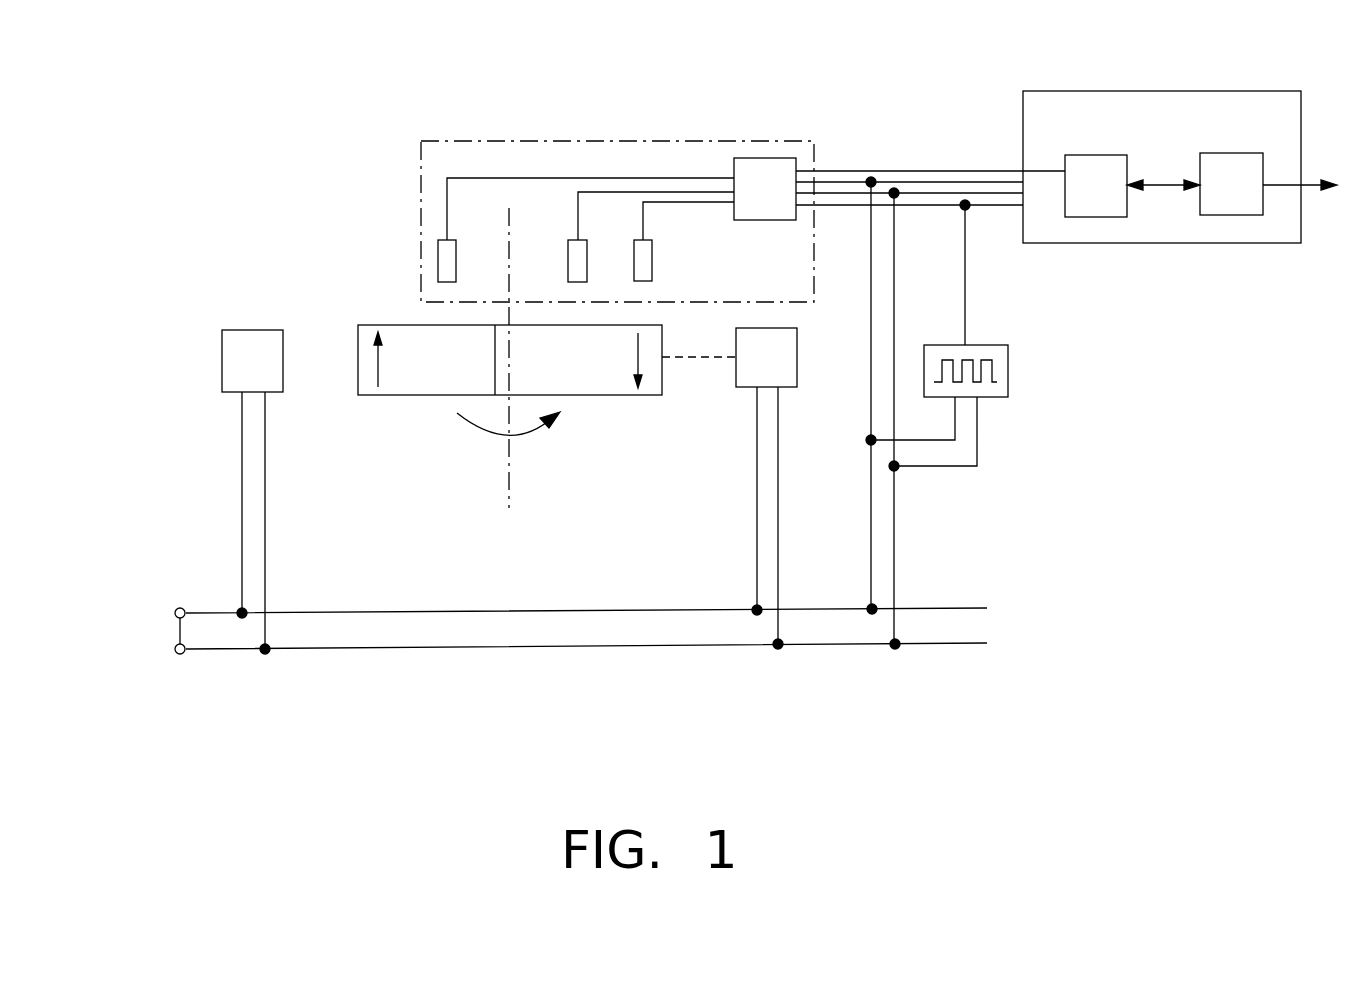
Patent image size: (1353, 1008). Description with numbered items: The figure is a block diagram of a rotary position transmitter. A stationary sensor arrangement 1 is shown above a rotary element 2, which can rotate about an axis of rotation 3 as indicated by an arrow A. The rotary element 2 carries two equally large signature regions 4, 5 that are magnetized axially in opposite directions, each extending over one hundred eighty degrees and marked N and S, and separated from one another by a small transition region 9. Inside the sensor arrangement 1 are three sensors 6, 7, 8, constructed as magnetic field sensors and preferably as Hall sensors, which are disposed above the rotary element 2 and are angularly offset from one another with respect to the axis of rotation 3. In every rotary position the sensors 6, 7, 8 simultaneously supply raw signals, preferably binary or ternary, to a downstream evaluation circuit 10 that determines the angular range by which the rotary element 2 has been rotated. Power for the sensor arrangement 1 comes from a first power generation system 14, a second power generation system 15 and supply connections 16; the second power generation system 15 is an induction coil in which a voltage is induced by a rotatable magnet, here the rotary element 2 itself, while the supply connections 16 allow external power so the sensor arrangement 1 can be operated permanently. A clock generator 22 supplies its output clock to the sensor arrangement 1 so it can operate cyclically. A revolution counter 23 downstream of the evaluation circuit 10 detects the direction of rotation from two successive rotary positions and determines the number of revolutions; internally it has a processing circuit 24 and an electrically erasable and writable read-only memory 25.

The sensor arrangement 1 is at (590, 141).
The rotary element 2 is at (501, 406).
The axis of rotation 3 is at (512, 492).
The signature region 4 is at (423, 395).
The signature region 5 is at (600, 395).
The sensor 6 is at (456, 265).
The sensor 7 is at (568, 265).
The sensor 8 is at (634, 267).
The transition region 9 is at (495, 373).
The evaluation circuit 10 is at (765, 220).
The first power generation system 14 is at (250, 330).
The second power generation system 15 is at (797, 360).
The supply connections 16 is at (168, 603).
The clock generator 22 is at (1008, 368).
The revolution counter 23 is at (1176, 91).
The processing circuit 24 is at (1080, 155).
The read-only memory 25 is at (1220, 153).
The arrow A is at (475, 428).